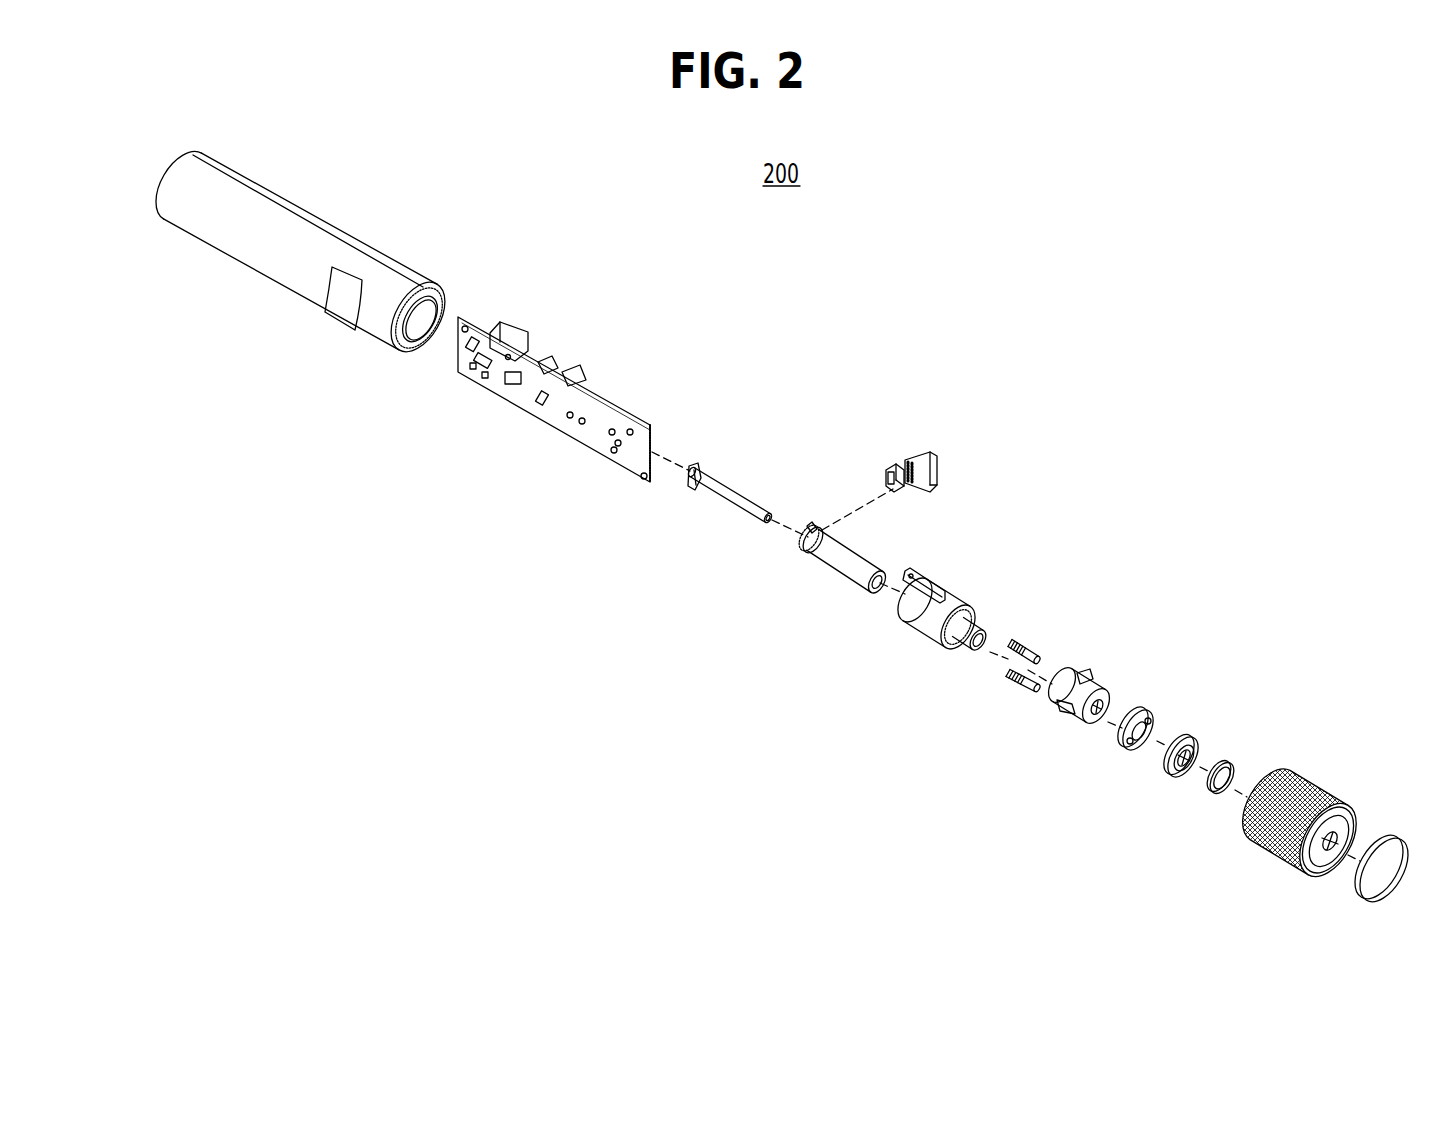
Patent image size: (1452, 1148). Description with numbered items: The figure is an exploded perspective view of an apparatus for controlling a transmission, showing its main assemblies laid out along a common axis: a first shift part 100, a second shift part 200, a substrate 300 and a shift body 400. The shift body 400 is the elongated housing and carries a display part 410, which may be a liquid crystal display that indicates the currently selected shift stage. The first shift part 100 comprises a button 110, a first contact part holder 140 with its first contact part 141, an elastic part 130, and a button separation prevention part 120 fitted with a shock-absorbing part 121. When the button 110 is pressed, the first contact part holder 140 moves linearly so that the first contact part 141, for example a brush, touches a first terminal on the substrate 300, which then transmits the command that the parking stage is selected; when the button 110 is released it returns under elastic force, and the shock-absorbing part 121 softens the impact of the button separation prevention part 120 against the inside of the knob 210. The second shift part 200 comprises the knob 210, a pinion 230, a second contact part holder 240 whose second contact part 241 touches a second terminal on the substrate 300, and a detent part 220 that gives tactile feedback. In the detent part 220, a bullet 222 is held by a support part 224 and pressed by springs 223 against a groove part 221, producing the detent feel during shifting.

The first shift part 100 is at (707, 583).
The button 110 is at (805, 832).
The button separation prevention part 120 is at (805, 832).
The shock-absorbing part 121 is at (805, 832).
The elastic part 130 is at (805, 832).
The first contact part holder 140 is at (735, 505).
The first contact part 141 is at (693, 484).
The second shift part 200 is at (1348, 650).
The knob 210 is at (1318, 785).
The detent part 220 is at (1217, 419).
The groove part 221 is at (1100, 532).
The bullet 222 is at (1100, 532).
The spring 223 is at (1100, 532).
The support part 224 is at (1100, 532).
The pinion 230 is at (1217, 419).
The second contact part holder 240 is at (1217, 419).
The second contact part 241 is at (886, 475).
The substrate 300 is at (588, 388).
The shift body 400 is at (323, 221).
The display part 410 is at (340, 324).